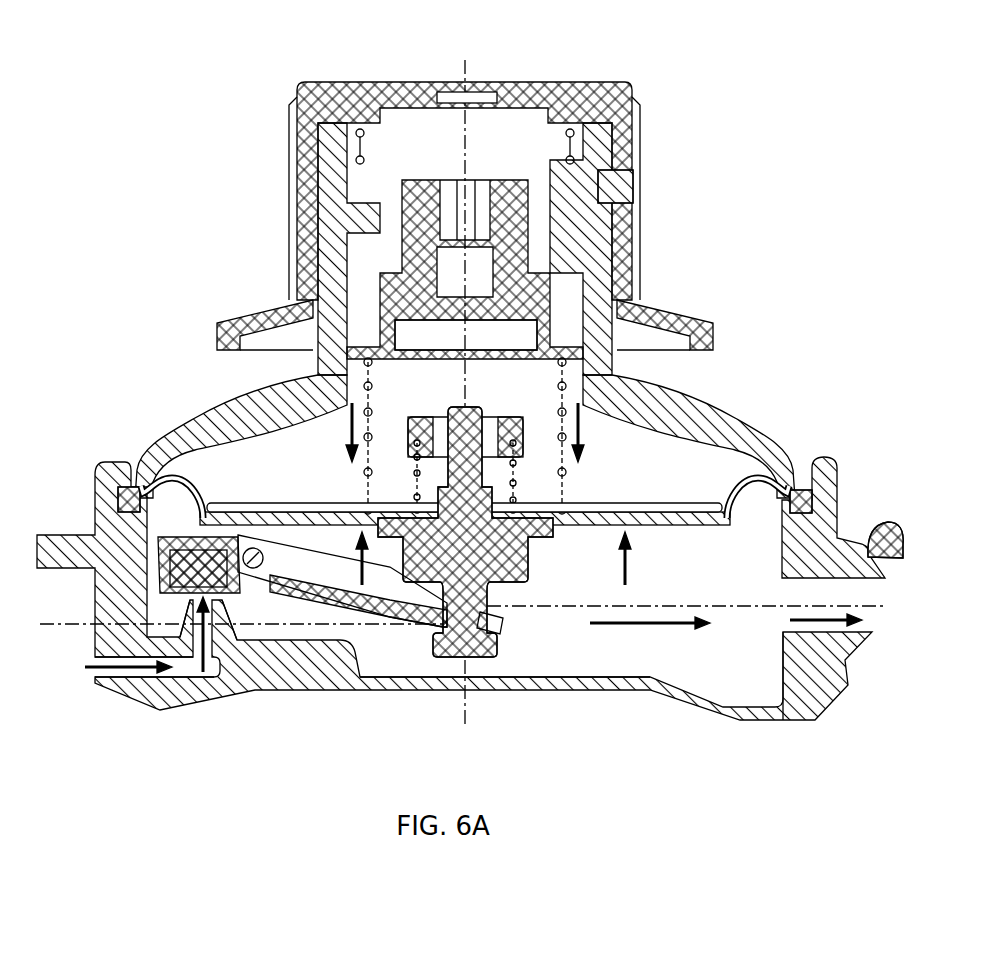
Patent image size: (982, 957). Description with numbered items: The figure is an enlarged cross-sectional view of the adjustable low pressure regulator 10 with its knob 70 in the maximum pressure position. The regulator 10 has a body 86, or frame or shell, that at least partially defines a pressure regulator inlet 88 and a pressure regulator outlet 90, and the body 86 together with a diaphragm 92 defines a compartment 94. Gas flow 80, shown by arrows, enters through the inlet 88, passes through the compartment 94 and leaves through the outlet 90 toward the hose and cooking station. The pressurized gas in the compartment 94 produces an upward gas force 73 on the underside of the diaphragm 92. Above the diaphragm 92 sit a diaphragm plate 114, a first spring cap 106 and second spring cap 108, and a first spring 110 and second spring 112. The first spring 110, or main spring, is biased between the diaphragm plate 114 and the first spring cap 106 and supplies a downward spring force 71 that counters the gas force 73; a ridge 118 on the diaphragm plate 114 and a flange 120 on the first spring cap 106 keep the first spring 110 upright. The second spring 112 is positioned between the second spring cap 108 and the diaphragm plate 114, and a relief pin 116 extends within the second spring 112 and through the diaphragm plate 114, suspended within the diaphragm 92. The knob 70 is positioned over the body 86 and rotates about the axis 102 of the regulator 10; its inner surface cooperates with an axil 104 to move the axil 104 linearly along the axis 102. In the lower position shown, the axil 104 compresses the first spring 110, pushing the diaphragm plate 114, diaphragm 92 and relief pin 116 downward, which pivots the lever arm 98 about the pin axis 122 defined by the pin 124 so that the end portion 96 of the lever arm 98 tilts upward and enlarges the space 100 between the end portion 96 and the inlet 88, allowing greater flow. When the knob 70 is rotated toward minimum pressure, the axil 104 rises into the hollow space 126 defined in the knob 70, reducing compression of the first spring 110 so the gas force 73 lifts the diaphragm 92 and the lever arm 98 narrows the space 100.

The pressure regulator 10 is at (780, 255).
The knob 70 is at (260, 298).
The spring force 71 is at (347, 430).
The gas force 73 is at (364, 558).
The gas flow 80 is at (105, 662).
The body 86 is at (702, 402).
The pressure regulator inlet 88 is at (208, 593).
The pressure regulator outlet 90 is at (807, 632).
The diaphragm 92 is at (746, 492).
The compartment 94 is at (603, 672).
The end portion 96 is at (178, 593).
The lever arm 98 is at (308, 600).
The space 100 is at (182, 590).
The axis 102 is at (467, 72).
The axil 104 is at (424, 183).
The first spring cap 106 is at (396, 332).
The second spring cap 108 is at (505, 416).
The first spring 110 is at (566, 440).
The second spring 112 is at (414, 497).
The diaphragm plate 114 is at (657, 507).
The relief pin 116 is at (529, 556).
The ridge 118 is at (573, 506).
The flange 120 is at (371, 363).
The pin axis 122 is at (262, 553).
The pin 124 is at (266, 573).
The hollow space 126 is at (515, 118).